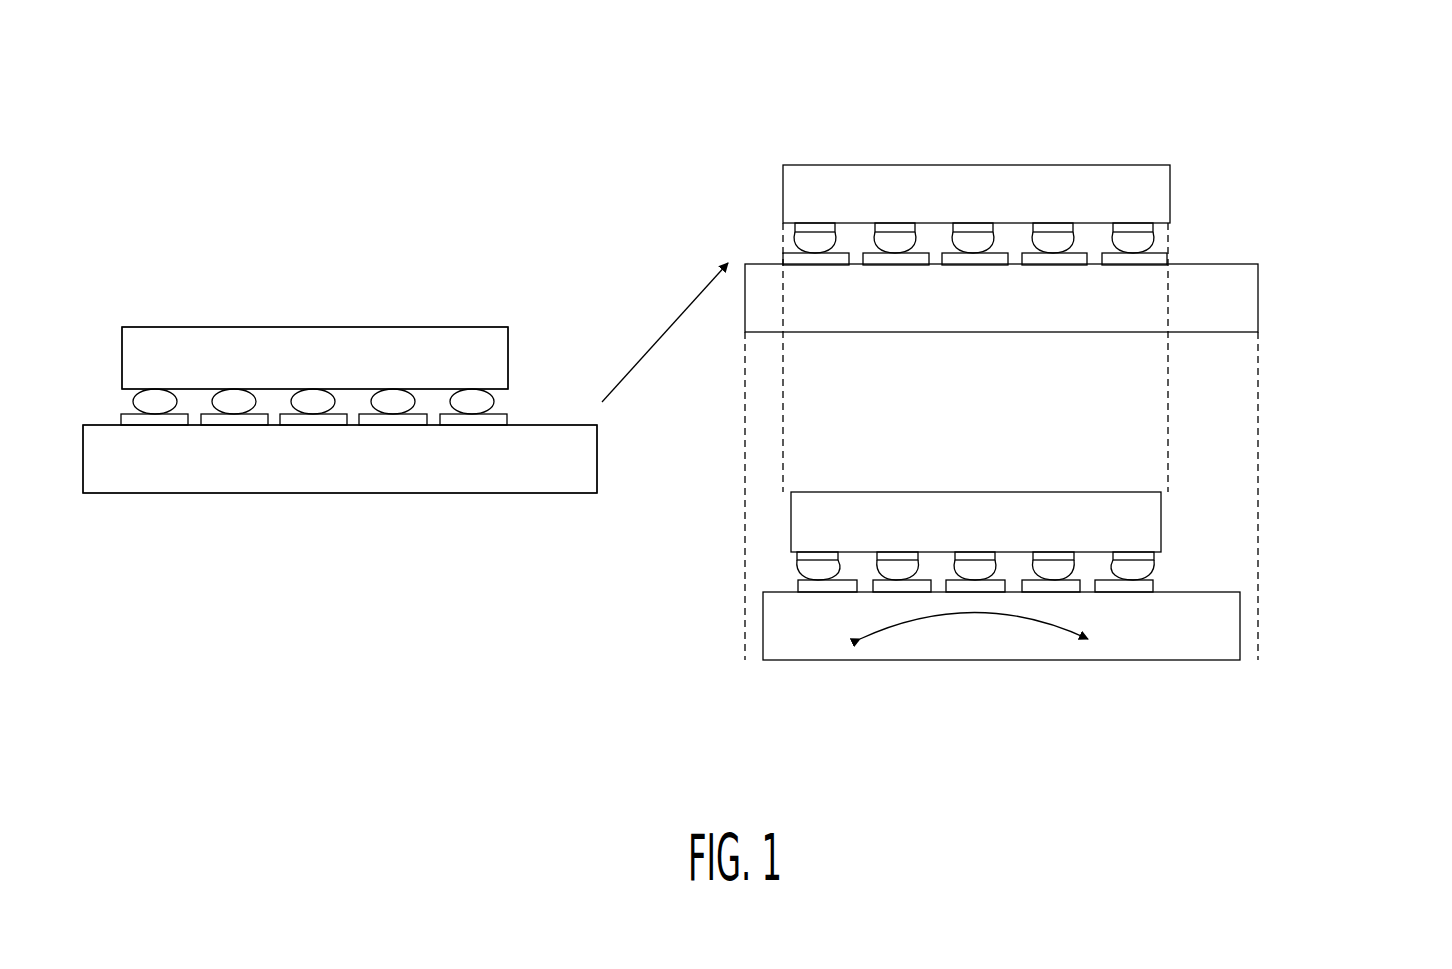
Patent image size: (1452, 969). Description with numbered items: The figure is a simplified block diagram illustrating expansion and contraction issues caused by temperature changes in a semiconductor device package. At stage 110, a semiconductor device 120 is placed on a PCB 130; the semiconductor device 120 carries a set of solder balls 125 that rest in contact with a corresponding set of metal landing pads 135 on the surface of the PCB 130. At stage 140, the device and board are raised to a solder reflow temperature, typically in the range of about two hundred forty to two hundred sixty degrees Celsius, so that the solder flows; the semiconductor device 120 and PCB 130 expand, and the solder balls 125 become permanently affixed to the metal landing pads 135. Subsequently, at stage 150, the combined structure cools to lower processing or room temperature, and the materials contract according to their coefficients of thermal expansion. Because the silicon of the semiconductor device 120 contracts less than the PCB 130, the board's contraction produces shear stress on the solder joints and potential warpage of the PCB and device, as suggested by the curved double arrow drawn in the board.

The stage 110 is at (290, 292).
The semiconductor device 120 is at (463, 327).
The solder balls 125 is at (484, 403).
The PCB 130 is at (262, 481).
The metal landing pads 135 is at (475, 421).
The stage 140 is at (1214, 136).
The stage 150 is at (1104, 679).